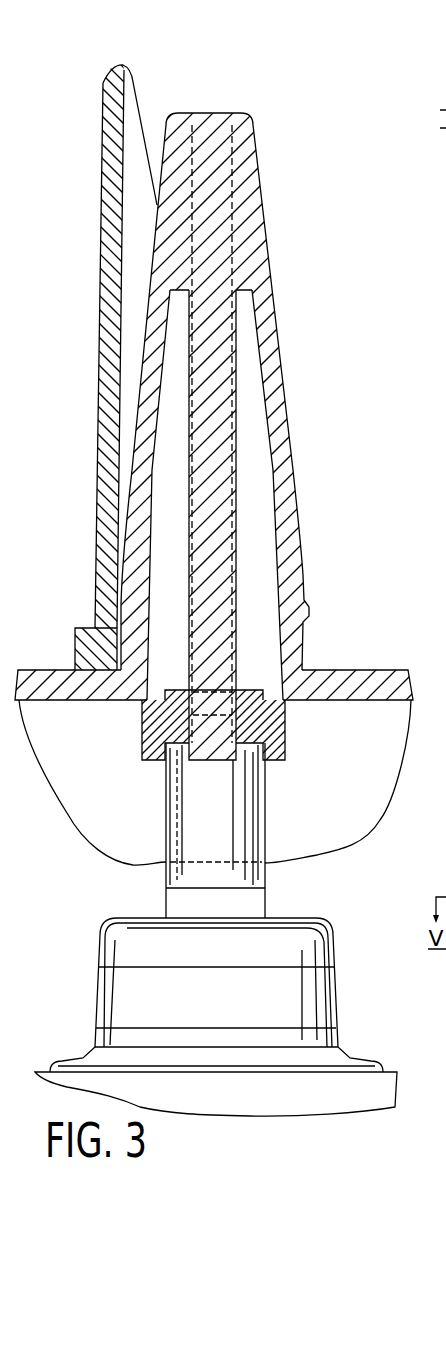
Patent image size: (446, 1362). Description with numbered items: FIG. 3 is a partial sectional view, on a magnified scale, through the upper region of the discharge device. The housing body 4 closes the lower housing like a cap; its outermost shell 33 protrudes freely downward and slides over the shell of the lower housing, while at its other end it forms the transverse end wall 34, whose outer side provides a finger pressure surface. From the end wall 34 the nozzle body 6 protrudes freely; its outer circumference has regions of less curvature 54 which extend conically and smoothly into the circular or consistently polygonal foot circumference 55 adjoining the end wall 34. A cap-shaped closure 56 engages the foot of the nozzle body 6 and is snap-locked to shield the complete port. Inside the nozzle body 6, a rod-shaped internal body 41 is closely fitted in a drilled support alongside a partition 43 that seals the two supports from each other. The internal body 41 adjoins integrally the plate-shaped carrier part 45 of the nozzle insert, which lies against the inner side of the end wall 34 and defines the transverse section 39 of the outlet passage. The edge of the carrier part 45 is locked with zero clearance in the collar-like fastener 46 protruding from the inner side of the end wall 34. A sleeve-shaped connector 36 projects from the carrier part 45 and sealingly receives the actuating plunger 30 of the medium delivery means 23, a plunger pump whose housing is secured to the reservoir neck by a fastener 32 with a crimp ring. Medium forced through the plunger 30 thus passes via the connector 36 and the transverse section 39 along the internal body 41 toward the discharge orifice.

The housing body 4 is at (223, 400).
The nozzle body 6 is at (223, 400).
The medium delivery means 23 is at (354, 973).
The actuating plunger 30 is at (177, 900).
The fastener 32 is at (385, 1072).
The outermost shell 33 is at (338, 837).
The end wall 34 is at (380, 673).
The connector 36 is at (173, 787).
The transverse section 39 is at (218, 715).
The internal body 41 is at (230, 190).
The partition 43 is at (217, 364).
The carrier part 45 is at (236, 400).
The fastener 46 is at (143, 748).
The regions of less curvature 54 is at (287, 394).
The foot circumference 55 is at (308, 575).
The closure 56 is at (109, 70).